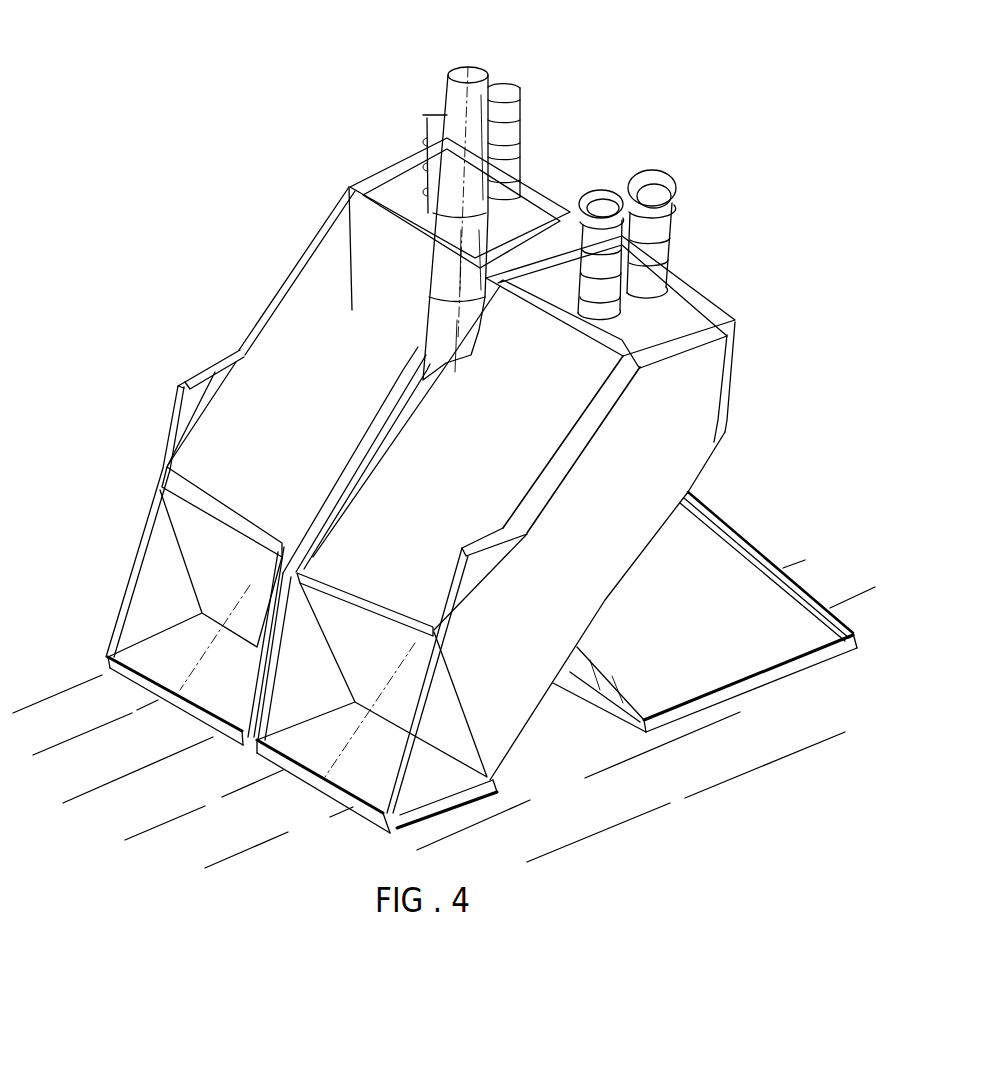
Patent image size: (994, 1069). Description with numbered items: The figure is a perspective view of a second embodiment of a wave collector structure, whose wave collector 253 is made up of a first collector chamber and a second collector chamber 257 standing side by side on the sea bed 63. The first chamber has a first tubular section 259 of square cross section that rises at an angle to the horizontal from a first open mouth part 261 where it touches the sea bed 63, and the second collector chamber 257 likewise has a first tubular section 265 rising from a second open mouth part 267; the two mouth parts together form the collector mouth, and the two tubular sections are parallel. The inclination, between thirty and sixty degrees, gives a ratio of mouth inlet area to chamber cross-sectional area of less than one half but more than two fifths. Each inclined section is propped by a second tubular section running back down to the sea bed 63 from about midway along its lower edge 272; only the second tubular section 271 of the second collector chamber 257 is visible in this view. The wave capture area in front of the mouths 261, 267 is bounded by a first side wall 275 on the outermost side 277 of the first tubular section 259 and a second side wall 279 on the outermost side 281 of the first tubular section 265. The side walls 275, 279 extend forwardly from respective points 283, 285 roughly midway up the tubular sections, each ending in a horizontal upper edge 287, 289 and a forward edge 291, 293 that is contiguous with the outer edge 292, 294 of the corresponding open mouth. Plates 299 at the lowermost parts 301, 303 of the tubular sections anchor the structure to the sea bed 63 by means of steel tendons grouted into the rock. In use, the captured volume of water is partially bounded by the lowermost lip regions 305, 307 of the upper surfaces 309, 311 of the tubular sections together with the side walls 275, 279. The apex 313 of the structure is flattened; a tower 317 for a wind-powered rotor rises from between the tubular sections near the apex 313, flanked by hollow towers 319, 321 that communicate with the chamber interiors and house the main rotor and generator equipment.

The sea bed 63 is at (120, 800).
The wave collector 253 is at (316, 240).
The second collector chamber 257 is at (698, 478).
The first tubular section 259 is at (300, 317).
The first open mouth part 261 is at (240, 607).
The first tubular section 265 is at (733, 404).
The second open mouth part 267 is at (480, 753).
The second tubular section 271 is at (693, 548).
The lower edge 272 is at (530, 733).
The first side wall 275 is at (182, 384).
The outermost side 277 is at (243, 350).
The second side wall 279 is at (470, 587).
The outermost side 281 is at (620, 537).
The point 283 is at (233, 377).
The point 285 is at (530, 536).
The horizontal upper edge 287 is at (215, 378).
The horizontal upper edge 289 is at (480, 538).
The forward edge 291 is at (176, 404).
The outer edge 292 is at (143, 518).
The forward edge 293 is at (460, 563).
The outer edge 294 is at (470, 783).
The plates 299 is at (160, 700).
The lowermost part 301 is at (197, 718).
The lowermost part 303 is at (733, 680).
The lowermost lip region 305 is at (220, 487).
The lowermost lip region 307 is at (440, 630).
The upper surface 309 is at (350, 186).
The upper surface 311 is at (520, 415).
The apex 313 is at (637, 343).
The tower 317 is at (469, 64).
The hollow tower 319 is at (423, 116).
The hollow tower 321 is at (599, 192).